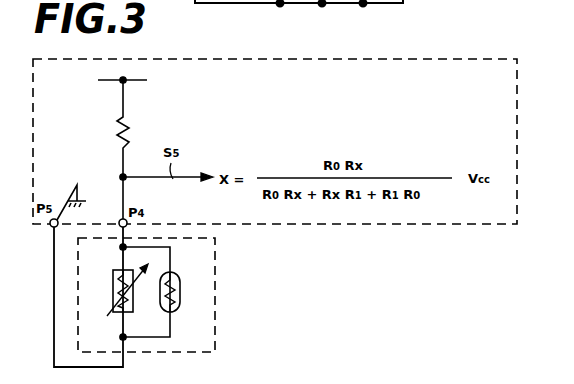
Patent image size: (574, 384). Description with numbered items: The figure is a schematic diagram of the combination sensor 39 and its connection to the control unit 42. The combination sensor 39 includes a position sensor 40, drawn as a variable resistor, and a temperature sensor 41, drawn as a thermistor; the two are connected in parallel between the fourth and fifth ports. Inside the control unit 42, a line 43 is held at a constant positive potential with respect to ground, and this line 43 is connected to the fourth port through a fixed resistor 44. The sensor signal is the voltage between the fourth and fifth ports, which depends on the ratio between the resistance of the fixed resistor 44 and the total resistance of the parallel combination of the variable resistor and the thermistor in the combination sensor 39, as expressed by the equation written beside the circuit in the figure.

The combination sensor 39 is at (175, 295).
The position sensor 40 is at (120, 316).
The temperature sensor 41 is at (177, 307).
The control unit 42 is at (295, 228).
The line 43 is at (147, 80).
The fixed resistor 44 is at (118, 134).